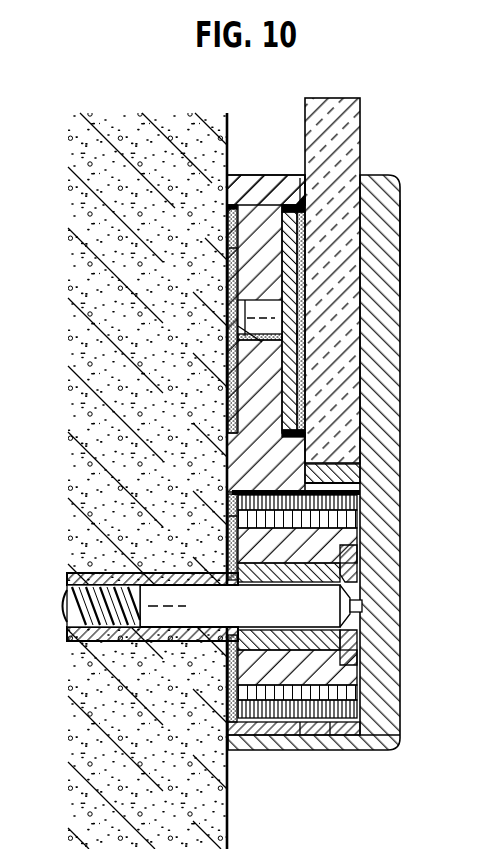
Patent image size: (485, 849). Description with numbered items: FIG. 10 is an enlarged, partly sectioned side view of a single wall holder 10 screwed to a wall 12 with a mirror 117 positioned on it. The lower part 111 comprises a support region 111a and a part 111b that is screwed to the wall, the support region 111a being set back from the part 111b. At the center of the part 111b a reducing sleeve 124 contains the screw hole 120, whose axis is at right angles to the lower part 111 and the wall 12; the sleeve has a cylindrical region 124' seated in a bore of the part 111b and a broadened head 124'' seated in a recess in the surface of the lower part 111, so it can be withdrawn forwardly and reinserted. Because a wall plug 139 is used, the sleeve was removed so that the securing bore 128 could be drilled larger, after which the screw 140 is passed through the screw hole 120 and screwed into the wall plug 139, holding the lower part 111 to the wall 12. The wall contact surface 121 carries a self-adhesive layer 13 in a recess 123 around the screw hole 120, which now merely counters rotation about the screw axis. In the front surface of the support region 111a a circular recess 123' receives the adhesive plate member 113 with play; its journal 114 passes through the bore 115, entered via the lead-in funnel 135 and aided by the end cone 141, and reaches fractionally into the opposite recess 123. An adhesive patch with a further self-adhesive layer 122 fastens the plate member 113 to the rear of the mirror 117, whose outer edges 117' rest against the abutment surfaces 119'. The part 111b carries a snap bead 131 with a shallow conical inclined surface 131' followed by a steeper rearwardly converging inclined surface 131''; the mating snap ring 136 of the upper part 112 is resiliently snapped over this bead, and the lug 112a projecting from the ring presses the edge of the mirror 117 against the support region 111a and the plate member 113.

The fastening assembly 10 is at (303, 192).
The wall 12 is at (82, 372).
The self-adhesive layer 13 is at (230, 250).
The lower part 111 is at (227, 473).
The support region 111a is at (246, 178).
The part screwed to the wall 111b is at (345, 676).
The upper part 112 is at (396, 502).
The lug 112a is at (393, 278).
The adhesive plate member 113 is at (277, 198).
The journal 114 is at (240, 319).
The bore 115 is at (246, 337).
The mirror 117 is at (336, 261).
The outer edges of the mirror 117' is at (372, 451).
The abutment surfaces 119' is at (372, 466).
The screw hole 120 is at (325, 606).
The wall contact surface 121 is at (231, 442).
The further self-adhesive layer 122 is at (310, 240).
The circular recess 123 is at (204, 463).
The circular recess in the support region 123' is at (318, 316).
The reducing sleeve 124 is at (297, 644).
The cylindrical region 124' is at (256, 591).
The broadened head 124'' is at (399, 600).
The securing bore 128 is at (128, 642).
The snap bead 131 is at (339, 717).
The conical inclined surface 131' is at (382, 767).
The rearwardly converging inclined surface 131'' is at (339, 761).
The lead-in funnel 135 is at (303, 336).
The mating snap ring 136 is at (312, 732).
The wall plug 139 is at (78, 572).
The screw 140 is at (172, 618).
The end cone 141 is at (240, 302).